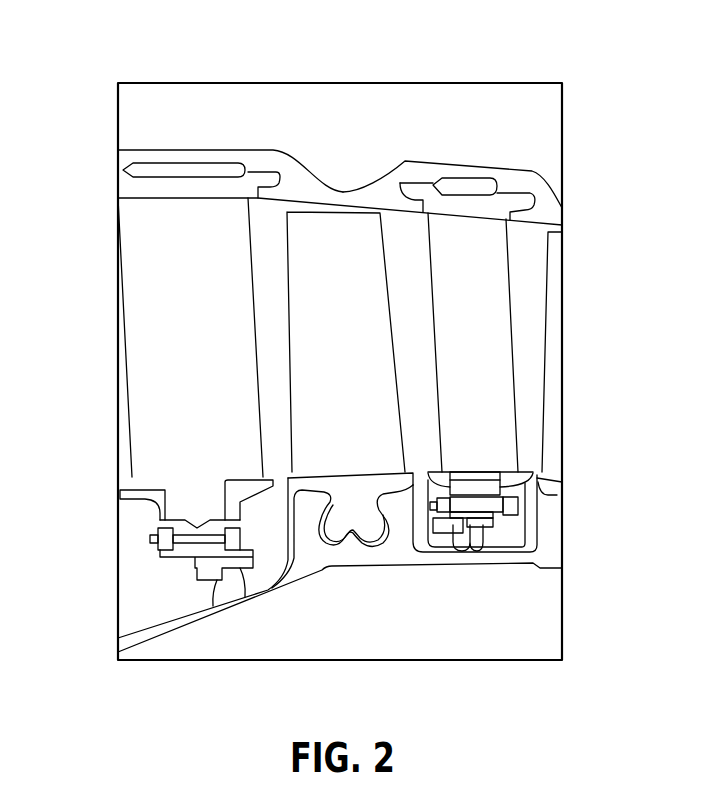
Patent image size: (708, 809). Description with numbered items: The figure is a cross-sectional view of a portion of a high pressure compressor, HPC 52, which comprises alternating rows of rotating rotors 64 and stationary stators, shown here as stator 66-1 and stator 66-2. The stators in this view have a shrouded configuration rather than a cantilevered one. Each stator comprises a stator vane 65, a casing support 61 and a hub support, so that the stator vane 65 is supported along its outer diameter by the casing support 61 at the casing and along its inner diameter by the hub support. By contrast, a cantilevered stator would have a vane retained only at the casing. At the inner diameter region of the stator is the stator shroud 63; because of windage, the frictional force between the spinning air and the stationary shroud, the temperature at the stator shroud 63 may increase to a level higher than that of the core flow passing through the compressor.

The high pressure compressor 52 is at (229, 100).
The rotor 64 is at (352, 225).
The casing support 61 is at (130, 185).
The stator 66-1 is at (145, 300).
The stator 66-2 is at (497, 432).
The stator vane 65 is at (143, 442).
The stator shroud 63 is at (145, 563).